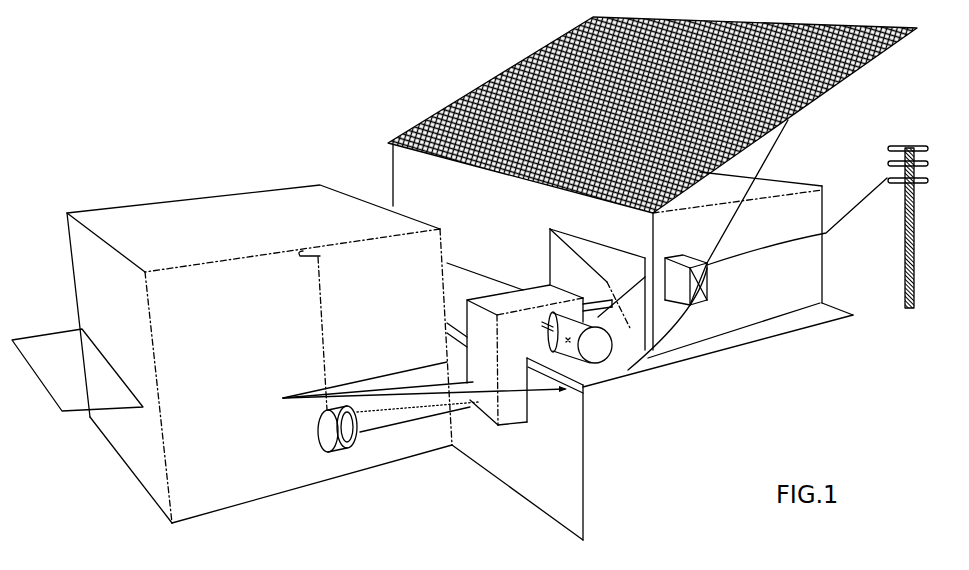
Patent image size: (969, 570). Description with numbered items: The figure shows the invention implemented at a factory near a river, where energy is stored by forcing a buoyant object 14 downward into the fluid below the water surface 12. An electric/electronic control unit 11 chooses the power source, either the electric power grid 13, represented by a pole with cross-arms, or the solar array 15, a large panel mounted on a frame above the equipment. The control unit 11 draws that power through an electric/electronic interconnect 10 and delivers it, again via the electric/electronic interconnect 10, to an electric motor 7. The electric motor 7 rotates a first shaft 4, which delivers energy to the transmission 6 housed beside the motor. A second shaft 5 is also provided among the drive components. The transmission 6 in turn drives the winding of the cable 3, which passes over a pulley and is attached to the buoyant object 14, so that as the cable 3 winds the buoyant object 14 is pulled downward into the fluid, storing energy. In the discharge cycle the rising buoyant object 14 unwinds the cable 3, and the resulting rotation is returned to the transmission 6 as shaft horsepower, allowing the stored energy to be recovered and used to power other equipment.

The cable 3 is at (370, 351).
The first shaft 4 is at (587, 410).
The second shaft 5 is at (539, 342).
The transmission 6 is at (623, 251).
The electric motor 7 is at (607, 384).
The electric/electronic interconnect 10 is at (763, 264).
The electric/electronic control unit 11 is at (730, 338).
The water surface 12 is at (77, 358).
The electric power grid 13 is at (900, 194).
The buoyant object 14 is at (294, 199).
The solar array 15 is at (436, 108).